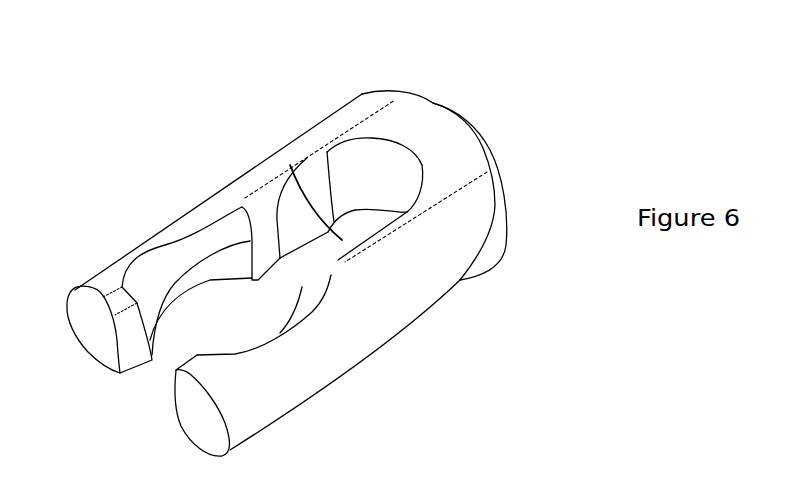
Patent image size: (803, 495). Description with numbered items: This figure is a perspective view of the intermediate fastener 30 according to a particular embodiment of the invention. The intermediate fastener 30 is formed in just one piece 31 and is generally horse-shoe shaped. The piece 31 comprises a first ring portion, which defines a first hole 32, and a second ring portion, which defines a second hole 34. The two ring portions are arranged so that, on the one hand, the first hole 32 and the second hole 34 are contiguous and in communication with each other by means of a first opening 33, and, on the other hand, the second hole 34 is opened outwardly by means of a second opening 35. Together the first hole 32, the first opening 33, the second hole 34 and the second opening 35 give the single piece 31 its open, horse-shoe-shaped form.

The intermediate fastener 30 is at (162, 122).
The piece 31 is at (432, 128).
The first hole 32 is at (305, 238).
The first opening 33 is at (293, 268).
The second hole 34 is at (228, 320).
The second opening 35 is at (153, 367).